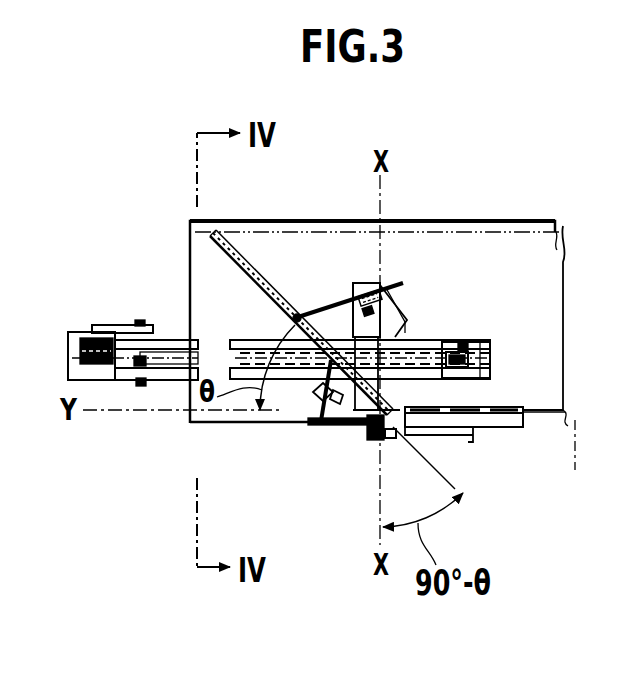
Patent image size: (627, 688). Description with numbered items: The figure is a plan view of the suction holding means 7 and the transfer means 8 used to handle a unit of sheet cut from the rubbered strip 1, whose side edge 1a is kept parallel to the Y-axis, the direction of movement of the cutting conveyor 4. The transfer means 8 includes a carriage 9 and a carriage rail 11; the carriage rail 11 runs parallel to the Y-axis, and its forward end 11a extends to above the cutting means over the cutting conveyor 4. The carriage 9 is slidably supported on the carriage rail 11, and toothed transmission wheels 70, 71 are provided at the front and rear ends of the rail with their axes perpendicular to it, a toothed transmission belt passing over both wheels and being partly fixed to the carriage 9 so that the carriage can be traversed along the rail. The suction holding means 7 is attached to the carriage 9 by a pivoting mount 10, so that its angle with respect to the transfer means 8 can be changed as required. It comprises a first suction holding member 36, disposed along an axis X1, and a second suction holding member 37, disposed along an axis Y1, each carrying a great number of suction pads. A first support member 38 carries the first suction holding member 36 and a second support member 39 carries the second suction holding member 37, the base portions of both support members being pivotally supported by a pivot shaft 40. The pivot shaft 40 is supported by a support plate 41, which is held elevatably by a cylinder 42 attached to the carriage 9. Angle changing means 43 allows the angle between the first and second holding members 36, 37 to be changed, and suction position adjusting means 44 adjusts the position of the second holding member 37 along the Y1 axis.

The rubbered strip 1 is at (530, 298).
The side edge 1a is at (577, 460).
The cutting conveyor 4 is at (520, 221).
The suction holding means 7 is at (371, 446).
The transfer means 8 is at (120, 326).
The carriage 9 is at (388, 341).
The pivoting mount 10 is at (322, 302).
The carriage rail 11 is at (238, 342).
The forward end of the carriage rail 11a is at (490, 346).
The first suction holding member 36 is at (250, 262).
The second suction holding member 37 is at (507, 405).
The first support member 38 is at (292, 318).
The second support member 39 is at (510, 428).
The pivot shaft 40 is at (361, 440).
The support plate 41 is at (392, 286).
The cylinder 42 is at (404, 318).
The angle changing means 43 is at (306, 396).
The suction position adjusting means 44 is at (394, 450).
The toothed transmission wheel 70 is at (138, 368).
The toothed transmission wheel 71 is at (463, 340).